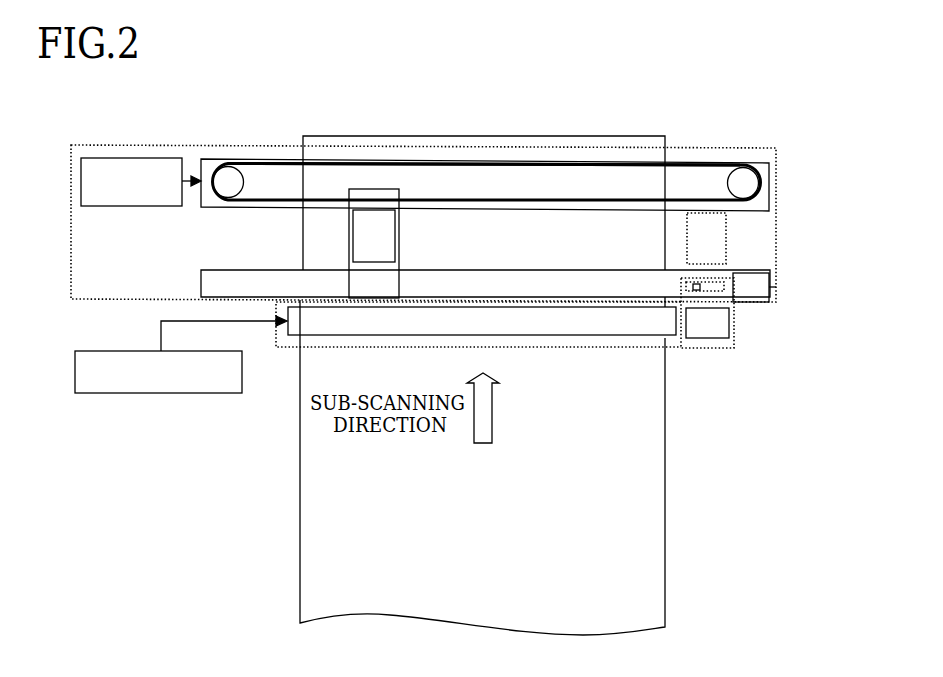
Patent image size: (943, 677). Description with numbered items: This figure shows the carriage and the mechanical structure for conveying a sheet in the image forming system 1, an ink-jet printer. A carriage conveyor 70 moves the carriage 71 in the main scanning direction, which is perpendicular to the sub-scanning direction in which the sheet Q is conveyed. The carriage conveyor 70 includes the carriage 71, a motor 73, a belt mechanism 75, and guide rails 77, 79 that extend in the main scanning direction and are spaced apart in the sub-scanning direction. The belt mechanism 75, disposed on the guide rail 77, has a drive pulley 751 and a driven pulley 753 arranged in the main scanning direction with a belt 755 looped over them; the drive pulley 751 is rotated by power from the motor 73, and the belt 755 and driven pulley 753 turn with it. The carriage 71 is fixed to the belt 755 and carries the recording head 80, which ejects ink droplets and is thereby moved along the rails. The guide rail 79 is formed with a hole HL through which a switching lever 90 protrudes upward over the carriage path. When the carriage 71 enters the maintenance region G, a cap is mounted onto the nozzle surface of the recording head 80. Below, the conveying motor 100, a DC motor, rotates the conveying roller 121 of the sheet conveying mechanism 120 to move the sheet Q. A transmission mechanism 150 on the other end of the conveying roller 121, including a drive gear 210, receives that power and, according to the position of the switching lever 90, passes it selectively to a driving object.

The image forming system 1 is at (550, 102).
The carriage conveyor 70 is at (711, 148).
The sheet Q is at (602, 138).
The motor 73 is at (135, 206).
The guide rail 77 is at (775, 165).
The belt mechanism 75 is at (272, 204).
The belt 755 is at (255, 162).
The drive pulley 751 is at (228, 180).
The driven pulley 753 is at (752, 188).
The carriage 71 is at (372, 198).
The recording head 80 is at (370, 246).
The maintenance region G is at (726, 246).
The guide rail 79 is at (772, 287).
The hole HL is at (725, 287).
The switching lever 90 is at (700, 292).
The transmission mechanism 150 is at (710, 349).
The drive gear 210 is at (720, 325).
The conveying roller 121 is at (296, 321).
The sheet conveying mechanism 120 is at (668, 349).
The conveying motor 100 is at (158, 395).